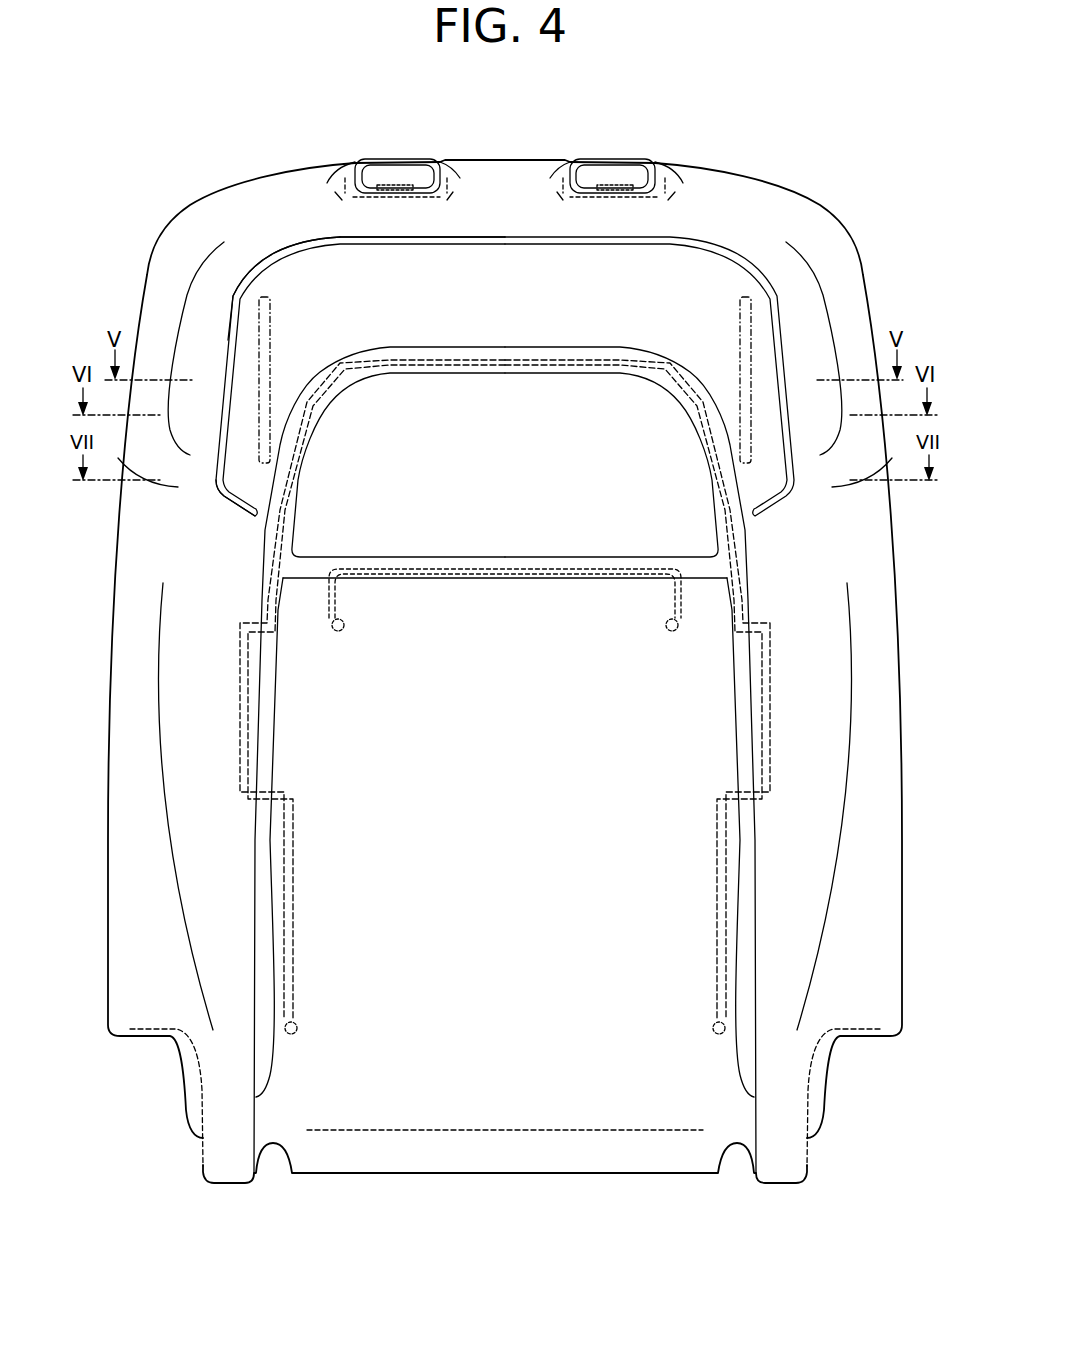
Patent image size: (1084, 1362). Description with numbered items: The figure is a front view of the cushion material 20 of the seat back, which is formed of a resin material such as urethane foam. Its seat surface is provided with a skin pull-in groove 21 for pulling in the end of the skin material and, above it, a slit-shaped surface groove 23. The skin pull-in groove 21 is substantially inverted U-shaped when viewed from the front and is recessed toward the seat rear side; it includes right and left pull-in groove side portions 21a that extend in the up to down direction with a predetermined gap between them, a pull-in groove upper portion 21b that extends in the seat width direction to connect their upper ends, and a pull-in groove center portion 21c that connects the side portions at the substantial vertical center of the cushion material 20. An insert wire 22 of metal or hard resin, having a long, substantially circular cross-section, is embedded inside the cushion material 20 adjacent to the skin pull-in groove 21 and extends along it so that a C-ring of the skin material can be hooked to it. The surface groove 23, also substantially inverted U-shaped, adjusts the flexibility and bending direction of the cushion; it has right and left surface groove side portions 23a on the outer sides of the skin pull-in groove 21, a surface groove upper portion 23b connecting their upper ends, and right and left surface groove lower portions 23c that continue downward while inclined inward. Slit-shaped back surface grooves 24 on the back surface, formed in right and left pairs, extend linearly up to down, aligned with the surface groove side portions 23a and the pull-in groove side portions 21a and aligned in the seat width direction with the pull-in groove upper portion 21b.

The cushion material 20 is at (125, 178).
The skin pull-in groove 21 is at (505, 816).
The pull-in groove side portions 21a is at (745, 843).
The pull-in groove upper portion 21b is at (527, 366).
The pull-in groove center portion 21c is at (698, 572).
The insert wire 22 is at (291, 982).
The surface groove 23 is at (420, 296).
The surface groove side portions 23a is at (233, 330).
The surface groove upper portion 23b is at (346, 248).
The surface groove lower portions 23c is at (213, 488).
The back surface groove 24 is at (748, 352).